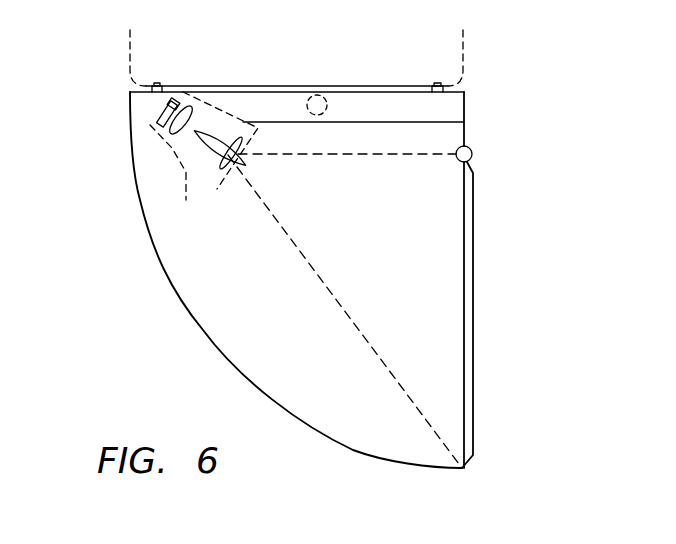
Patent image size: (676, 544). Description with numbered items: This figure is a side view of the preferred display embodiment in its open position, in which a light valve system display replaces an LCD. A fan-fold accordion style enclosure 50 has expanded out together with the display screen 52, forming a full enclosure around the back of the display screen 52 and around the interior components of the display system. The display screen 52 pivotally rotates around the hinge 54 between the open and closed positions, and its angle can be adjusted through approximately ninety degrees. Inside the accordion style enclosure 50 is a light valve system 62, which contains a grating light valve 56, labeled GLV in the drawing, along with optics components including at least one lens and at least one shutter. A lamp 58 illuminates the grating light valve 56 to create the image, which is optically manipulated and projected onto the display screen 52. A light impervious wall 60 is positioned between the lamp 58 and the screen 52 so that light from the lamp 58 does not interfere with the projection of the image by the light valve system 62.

The fan-fold accordion style enclosure 50 is at (136, 196).
The display screen 52 is at (475, 421).
The hinge 54 is at (472, 146).
The grating light valve 56 is at (181, 100).
The lamp 58 is at (322, 95).
The light impervious wall 60 is at (348, 123).
The light valve system 62 is at (306, 296).
The grating light valve GLV is at (162, 116).